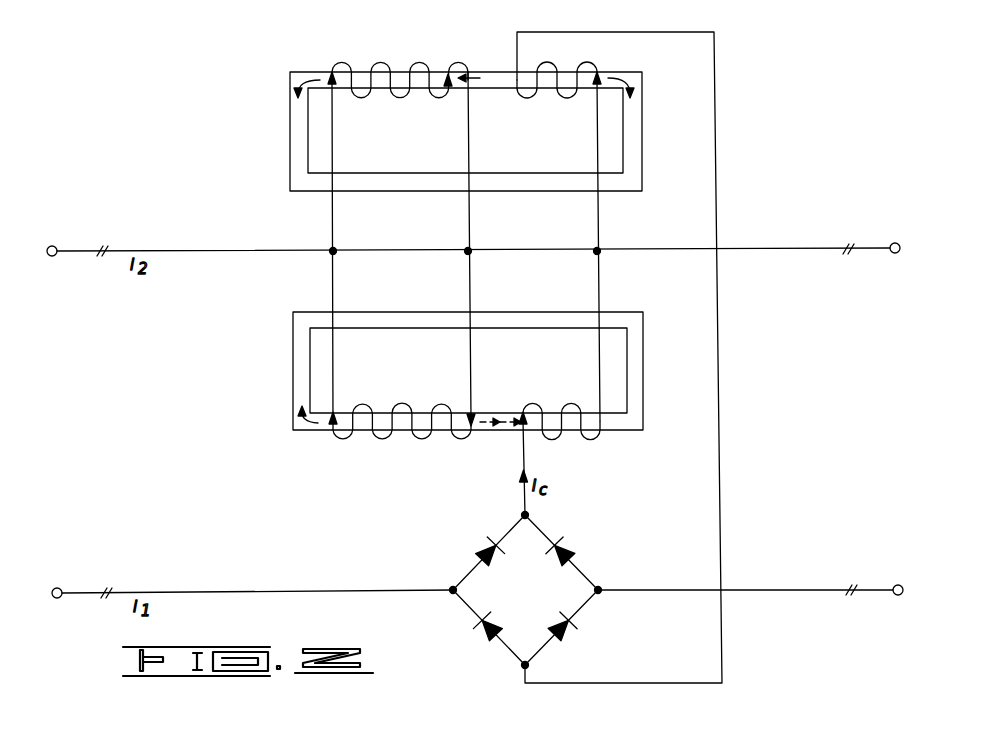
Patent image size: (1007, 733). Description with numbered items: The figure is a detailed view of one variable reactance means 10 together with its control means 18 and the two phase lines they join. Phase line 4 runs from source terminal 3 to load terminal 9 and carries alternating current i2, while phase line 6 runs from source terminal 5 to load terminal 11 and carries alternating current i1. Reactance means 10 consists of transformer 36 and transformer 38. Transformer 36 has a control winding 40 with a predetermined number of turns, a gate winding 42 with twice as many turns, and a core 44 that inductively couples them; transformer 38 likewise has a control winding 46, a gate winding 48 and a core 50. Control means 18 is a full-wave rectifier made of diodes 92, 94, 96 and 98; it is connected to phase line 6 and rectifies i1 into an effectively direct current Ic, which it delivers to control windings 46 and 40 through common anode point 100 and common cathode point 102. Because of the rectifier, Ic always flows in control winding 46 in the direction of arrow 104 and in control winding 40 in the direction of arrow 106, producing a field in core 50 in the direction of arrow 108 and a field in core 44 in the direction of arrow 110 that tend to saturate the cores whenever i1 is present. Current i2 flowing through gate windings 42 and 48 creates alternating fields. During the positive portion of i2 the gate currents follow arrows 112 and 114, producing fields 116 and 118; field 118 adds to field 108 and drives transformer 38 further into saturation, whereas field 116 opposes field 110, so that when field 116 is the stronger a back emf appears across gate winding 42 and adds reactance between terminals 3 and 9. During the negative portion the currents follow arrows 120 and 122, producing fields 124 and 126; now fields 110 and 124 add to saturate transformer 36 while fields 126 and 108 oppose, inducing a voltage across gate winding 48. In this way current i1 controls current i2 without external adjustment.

The variable reactance means 10 is at (638, 20).
The transformer 36 is at (466, 99).
The transformer 38 is at (468, 409).
The gate winding 42 is at (378, 62).
The control winding 40 is at (590, 62).
The core 44 is at (497, 173).
The gate winding 48 is at (383, 440).
The control winding 46 is at (592, 440).
The core 50 is at (491, 328).
The terminal 3 is at (41, 252).
The phase line 4 is at (238, 250).
The terminal 5 is at (46, 594).
The phase line 6 is at (256, 592).
The terminal 9 is at (904, 249).
The terminal 11 is at (912, 591).
The control means 18 is at (492, 583).
The diode 92 is at (488, 566).
The diode 94 is at (562, 545).
The diode 96 is at (575, 630).
The diode 98 is at (481, 628).
The common anode point 100 is at (533, 667).
The common cathode point 102 is at (530, 513).
The arrow 104 is at (524, 416).
The arrow 106 is at (594, 82).
The arrow 108 is at (521, 423).
The arrow 110 is at (636, 77).
The arrow 112 is at (329, 70).
The arrow 114 is at (345, 410).
The arrow 116 is at (297, 72).
The arrow 118 is at (297, 430).
The arrow 120 is at (449, 88).
The arrow 122 is at (478, 414).
The arrow 124 is at (467, 73).
The arrow 126 is at (487, 432).